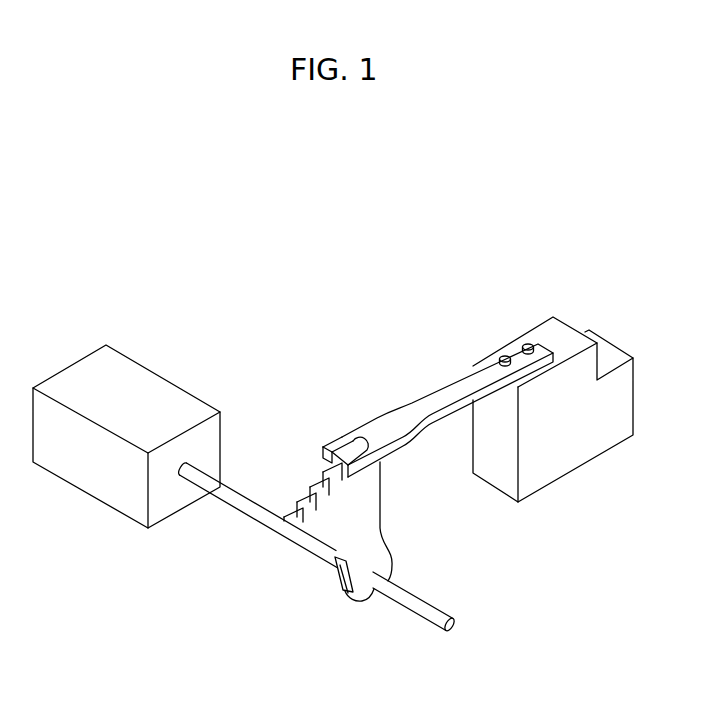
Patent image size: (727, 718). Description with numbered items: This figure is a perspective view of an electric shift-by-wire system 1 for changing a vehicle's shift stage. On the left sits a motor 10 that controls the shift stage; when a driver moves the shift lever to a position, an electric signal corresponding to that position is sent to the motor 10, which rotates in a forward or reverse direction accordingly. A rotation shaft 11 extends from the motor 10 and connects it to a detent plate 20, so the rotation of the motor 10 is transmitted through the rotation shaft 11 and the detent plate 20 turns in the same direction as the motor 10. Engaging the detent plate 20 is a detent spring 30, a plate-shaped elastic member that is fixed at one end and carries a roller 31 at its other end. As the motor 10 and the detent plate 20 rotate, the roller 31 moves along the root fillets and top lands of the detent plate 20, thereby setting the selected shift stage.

The electric shift-by-wire system 1 is at (424, 250).
The motor 10 is at (170, 379).
The rotation shaft 11 is at (262, 525).
The detent plate 20 is at (355, 605).
The detent spring 30 is at (414, 403).
The roller 31 is at (340, 445).